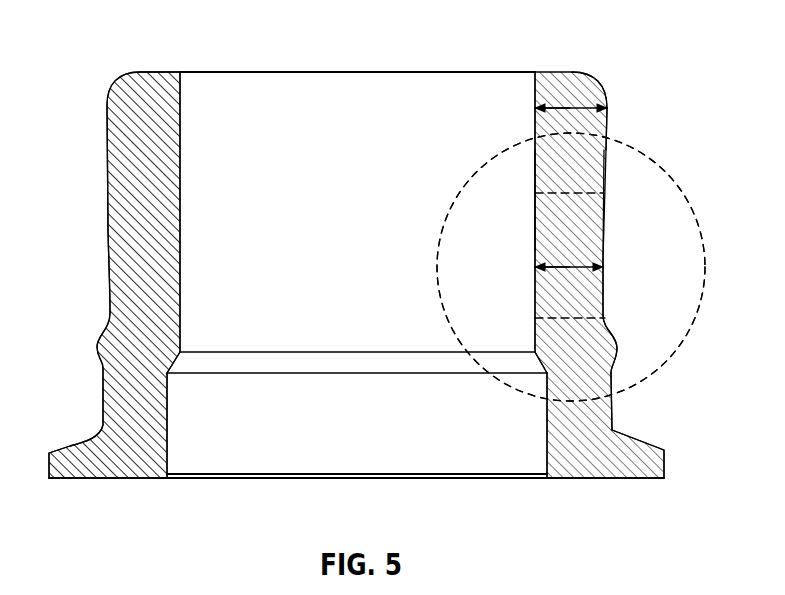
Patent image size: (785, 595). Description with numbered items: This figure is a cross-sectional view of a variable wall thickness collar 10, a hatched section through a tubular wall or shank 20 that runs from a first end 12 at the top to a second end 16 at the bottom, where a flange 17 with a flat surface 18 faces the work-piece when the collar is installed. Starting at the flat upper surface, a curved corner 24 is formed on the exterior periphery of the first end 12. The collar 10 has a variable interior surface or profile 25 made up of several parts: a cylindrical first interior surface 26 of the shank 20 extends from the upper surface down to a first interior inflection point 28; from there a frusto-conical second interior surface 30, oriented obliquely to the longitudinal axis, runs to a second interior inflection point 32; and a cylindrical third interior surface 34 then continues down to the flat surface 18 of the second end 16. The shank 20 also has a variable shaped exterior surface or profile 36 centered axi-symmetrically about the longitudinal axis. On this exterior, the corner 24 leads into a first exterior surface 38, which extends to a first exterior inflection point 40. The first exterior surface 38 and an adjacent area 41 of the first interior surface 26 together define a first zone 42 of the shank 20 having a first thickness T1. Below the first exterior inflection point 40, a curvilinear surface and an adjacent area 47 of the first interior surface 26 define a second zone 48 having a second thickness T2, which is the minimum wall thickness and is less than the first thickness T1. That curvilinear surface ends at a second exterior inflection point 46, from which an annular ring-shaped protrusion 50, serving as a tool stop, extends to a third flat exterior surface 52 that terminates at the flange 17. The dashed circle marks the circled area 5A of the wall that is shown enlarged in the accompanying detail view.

The variable wall thickness collar 10 is at (106, 60).
The first end 12 is at (441, 72).
The second end 16 is at (220, 492).
The flange 17 is at (665, 450).
The flat surface 18 is at (592, 479).
The shank 20 is at (103, 250).
The curved corner 24 is at (580, 76).
The variable interior surface 25 is at (532, 193).
The first interior surface 26 is at (535, 92).
The first interior inflection point 28 is at (533, 351).
The second interior surface 30 is at (533, 362).
The second interior inflection point 32 is at (547, 375).
The third interior surface 34 is at (546, 479).
The variable shaped exterior surface 36 is at (664, 193).
The first exterior surface 38 is at (608, 126).
The first exterior inflection point 40 is at (604, 193).
The adjacent area 41 is at (535, 108).
The first zone 42 is at (569, 171).
The second exterior inflection point 46 is at (604, 320).
The adjacent area 47 is at (535, 267).
The second zone 48 is at (608, 240).
The protrusion 50 is at (618, 350).
The third flat exterior surface 52 is at (614, 428).
The first thickness T1 is at (602, 100).
The second thickness T2 is at (548, 262).
The circled area 5A is at (705, 280).